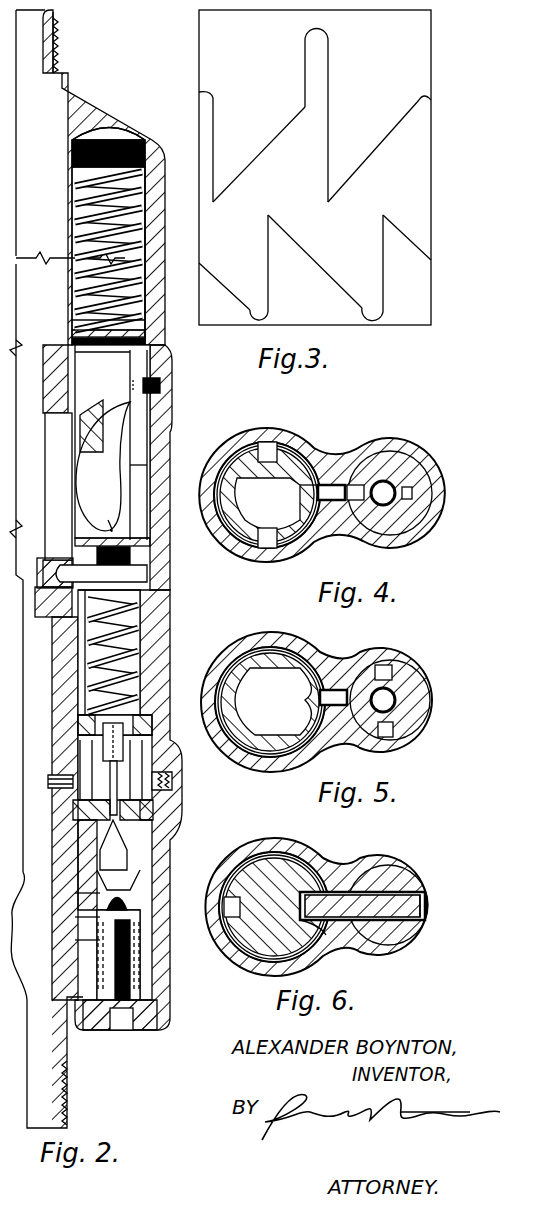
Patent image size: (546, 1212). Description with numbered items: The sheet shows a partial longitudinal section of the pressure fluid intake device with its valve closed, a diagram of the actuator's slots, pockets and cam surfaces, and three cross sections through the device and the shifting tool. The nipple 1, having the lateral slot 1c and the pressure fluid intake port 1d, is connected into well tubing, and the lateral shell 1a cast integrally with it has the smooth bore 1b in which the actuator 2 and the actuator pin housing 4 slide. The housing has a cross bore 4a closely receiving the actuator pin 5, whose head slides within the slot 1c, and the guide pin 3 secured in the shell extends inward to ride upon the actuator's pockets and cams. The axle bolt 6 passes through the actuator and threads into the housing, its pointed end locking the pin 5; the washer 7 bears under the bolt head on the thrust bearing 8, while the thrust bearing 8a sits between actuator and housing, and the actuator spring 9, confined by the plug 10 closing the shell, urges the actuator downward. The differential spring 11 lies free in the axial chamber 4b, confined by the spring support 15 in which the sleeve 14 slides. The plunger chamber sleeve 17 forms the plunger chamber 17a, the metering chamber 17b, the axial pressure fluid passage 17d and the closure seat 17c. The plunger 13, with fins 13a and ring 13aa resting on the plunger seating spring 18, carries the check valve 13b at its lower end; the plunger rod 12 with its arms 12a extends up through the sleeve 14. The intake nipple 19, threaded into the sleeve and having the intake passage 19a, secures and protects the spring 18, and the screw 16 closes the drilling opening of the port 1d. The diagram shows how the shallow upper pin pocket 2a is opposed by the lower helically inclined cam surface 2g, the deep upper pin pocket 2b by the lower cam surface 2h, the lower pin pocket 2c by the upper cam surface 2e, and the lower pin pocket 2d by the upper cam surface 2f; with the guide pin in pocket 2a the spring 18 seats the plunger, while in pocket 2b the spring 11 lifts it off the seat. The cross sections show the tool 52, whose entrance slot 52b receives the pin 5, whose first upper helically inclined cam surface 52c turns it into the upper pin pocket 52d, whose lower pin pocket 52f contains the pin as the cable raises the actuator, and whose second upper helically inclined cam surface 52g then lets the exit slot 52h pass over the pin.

In FIG. 2, the nipple 1 is at (56, 50).
In FIG. 4, the nipple 1 is at (232, 447).
In FIG. 5, the nipple 1 is at (268, 637).
In FIG. 6, the nipple 1 is at (260, 842).
In FIG. 2, the lateral shell 1a is at (160, 268).
In FIG. 4, the lateral shell 1a is at (425, 462).
In FIG. 5, the lateral shell 1a is at (412, 665).
In FIG. 6, the lateral shell 1a is at (403, 868).
In FIG. 2, the smooth bore 1b is at (143, 183).
In FIG. 2, the lateral slot 1c is at (58, 486).
In FIG. 4, the lateral slot 1c is at (330, 485).
In FIG. 5, the lateral slot 1c is at (338, 700).
In FIG. 6, the lateral slot 1c is at (322, 893).
In FIG. 2, the pressure fluid intake port 1d is at (58, 783).
In FIG. 2, the actuator 2 is at (172, 493).
In FIG. 3, the actuator 2 is at (216, 47).
In FIG. 4, the actuator 2 is at (383, 458).
In FIG. 5, the actuator 2 is at (403, 718).
In FIG. 3, the shallow upper pin pocket 2a is at (207, 95).
In FIG. 4, the shallow upper pin pocket 2a is at (337, 535).
In FIG. 2, the deep upper pin pocket 2b is at (72, 357).
In FIG. 3, the deep upper pin pocket 2b is at (320, 37).
In FIG. 4, the deep upper pin pocket 2b is at (410, 495).
In FIG. 2, the lower pin pocket 2c is at (108, 520).
In FIG. 3, the lower pin pocket 2c is at (383, 313).
In FIG. 5, the lower pin pocket 2c is at (388, 666).
In FIG. 3, the lower pin pocket 2d is at (268, 313).
In FIG. 5, the lower pin pocket 2d is at (382, 743).
In FIG. 2, the upper helically inclined cam surface 2e is at (75, 445).
In FIG. 3, the upper helically inclined cam surface 2e is at (374, 153).
In FIG. 3, the upper helically inclined cam surface 2f is at (262, 153).
In FIG. 2, the lower helically inclined cam surface 2g is at (140, 467).
In FIG. 3, the lower helically inclined cam surface 2g is at (208, 257).
In FIG. 2, the lower helically inclined cam surface 2h is at (85, 483).
In FIG. 3, the lower helically inclined cam surface 2h is at (295, 230).
In FIG. 2, the guide pin 3 is at (153, 383).
In FIG. 2, the actuator pin housing 4 is at (150, 690).
In FIG. 6, the actuator pin housing 4 is at (387, 947).
In FIG. 2, the cross bore 4a is at (150, 577).
In FIG. 6, the cross bore 4a is at (425, 930).
In FIG. 2, the axial chamber 4b is at (140, 665).
In FIG. 2, the actuator pin 5 is at (46, 572).
In FIG. 6, the actuator pin 5 is at (420, 908).
In FIG. 2, the axle bolt 6 is at (78, 323).
In FIG. 4, the axle bolt 6 is at (393, 502).
In FIG. 5, the axle bolt 6 is at (398, 700).
In FIG. 2, the washer 7 is at (147, 333).
In FIG. 2, the thrust bearing 8 is at (150, 343).
In FIG. 2, the thrust bearing 8a is at (148, 545).
In FIG. 2, the actuator spring 9 is at (143, 218).
In FIG. 2, the plug 10 is at (115, 128).
In FIG. 2, the differential spring 11 is at (140, 632).
In FIG. 2, the plunger rod 12 is at (75, 672).
In FIG. 2, the arms 12a is at (160, 773).
In FIG. 2, the plunger 13 is at (75, 855).
In FIG. 2, the fins 13a is at (75, 898).
In FIG. 2, the check valve 13b is at (75, 922).
In FIG. 2, the ring 13aa is at (75, 945).
In FIG. 2, the sleeve 14 is at (120, 757).
In FIG. 2, the spring support 15 is at (75, 735).
In FIG. 2, the screw 16 is at (172, 790).
In FIG. 2, the plunger chamber sleeve 17 is at (80, 960).
In FIG. 2, the plunger chamber 17a is at (150, 875).
In FIG. 2, the metering chamber 17b is at (140, 845).
In FIG. 2, the closure seat 17c is at (78, 828).
In FIG. 2, the axial pressure fluid passage 17d is at (170, 813).
In FIG. 2, the plunger seating spring 18 is at (160, 920).
In FIG. 2, the intake nipple 19 is at (160, 1025).
In FIG. 2, the intake passage 19a is at (125, 1040).
In FIG. 4, the tool 52 is at (280, 473).
In FIG. 5, the tool 52 is at (258, 738).
In FIG. 6, the tool 52 is at (262, 942).
In FIG. 6, the entrance slot 52b is at (328, 953).
In FIG. 4, the first upper helically inclined cam surface 52c is at (308, 477).
In FIG. 4, the upper pin pocket 52d is at (268, 443).
In FIG. 6, the lower pin pocket 52f is at (222, 918).
In FIG. 4, the second upper helically inclined cam surface 52g is at (242, 530).
In FIG. 4, the exit slot 52h is at (272, 548).